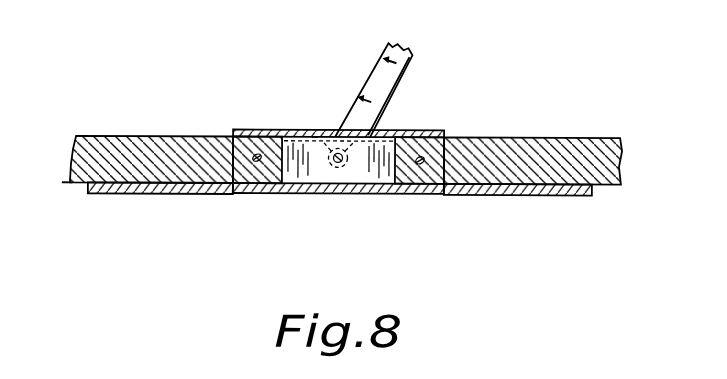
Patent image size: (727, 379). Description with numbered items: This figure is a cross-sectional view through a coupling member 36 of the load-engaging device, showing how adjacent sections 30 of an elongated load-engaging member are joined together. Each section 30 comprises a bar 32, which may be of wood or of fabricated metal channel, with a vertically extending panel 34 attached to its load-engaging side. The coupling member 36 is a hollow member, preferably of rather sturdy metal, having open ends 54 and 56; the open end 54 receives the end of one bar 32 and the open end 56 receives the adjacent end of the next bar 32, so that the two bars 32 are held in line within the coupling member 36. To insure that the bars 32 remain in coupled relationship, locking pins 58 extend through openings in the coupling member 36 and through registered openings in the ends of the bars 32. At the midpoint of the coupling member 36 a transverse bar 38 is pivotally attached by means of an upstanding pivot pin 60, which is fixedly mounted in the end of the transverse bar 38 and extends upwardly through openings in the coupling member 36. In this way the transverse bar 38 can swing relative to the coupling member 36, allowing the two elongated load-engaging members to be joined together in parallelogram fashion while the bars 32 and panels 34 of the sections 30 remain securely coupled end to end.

The section 30 is at (350, 166).
The bar 32 is at (165, 143).
The vertically extending panel 34 is at (130, 194).
The coupling member 36 is at (315, 131).
The transverse bar 38 is at (373, 70).
The open end 54 is at (348, 164).
The open end 56 is at (453, 134).
The locking pin 58 is at (256, 156).
The pivot pin 60 is at (338, 163).